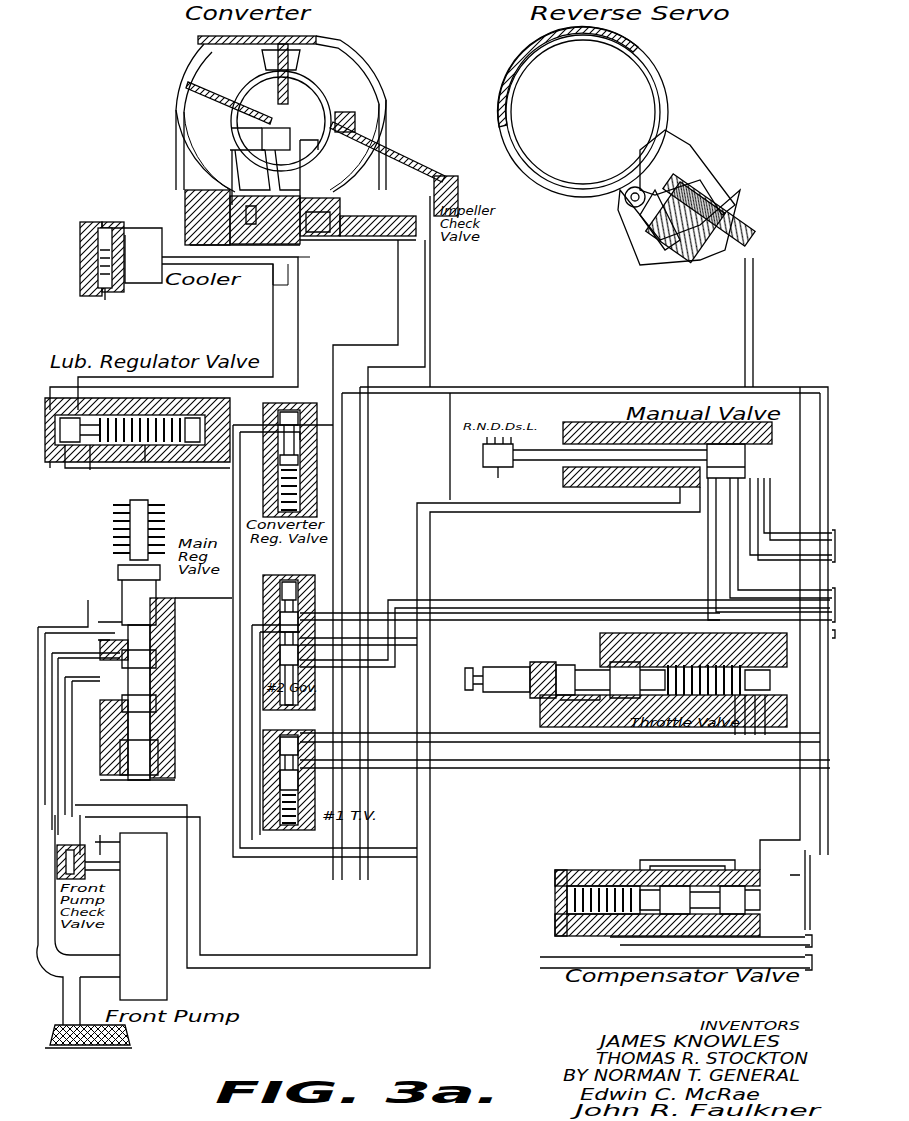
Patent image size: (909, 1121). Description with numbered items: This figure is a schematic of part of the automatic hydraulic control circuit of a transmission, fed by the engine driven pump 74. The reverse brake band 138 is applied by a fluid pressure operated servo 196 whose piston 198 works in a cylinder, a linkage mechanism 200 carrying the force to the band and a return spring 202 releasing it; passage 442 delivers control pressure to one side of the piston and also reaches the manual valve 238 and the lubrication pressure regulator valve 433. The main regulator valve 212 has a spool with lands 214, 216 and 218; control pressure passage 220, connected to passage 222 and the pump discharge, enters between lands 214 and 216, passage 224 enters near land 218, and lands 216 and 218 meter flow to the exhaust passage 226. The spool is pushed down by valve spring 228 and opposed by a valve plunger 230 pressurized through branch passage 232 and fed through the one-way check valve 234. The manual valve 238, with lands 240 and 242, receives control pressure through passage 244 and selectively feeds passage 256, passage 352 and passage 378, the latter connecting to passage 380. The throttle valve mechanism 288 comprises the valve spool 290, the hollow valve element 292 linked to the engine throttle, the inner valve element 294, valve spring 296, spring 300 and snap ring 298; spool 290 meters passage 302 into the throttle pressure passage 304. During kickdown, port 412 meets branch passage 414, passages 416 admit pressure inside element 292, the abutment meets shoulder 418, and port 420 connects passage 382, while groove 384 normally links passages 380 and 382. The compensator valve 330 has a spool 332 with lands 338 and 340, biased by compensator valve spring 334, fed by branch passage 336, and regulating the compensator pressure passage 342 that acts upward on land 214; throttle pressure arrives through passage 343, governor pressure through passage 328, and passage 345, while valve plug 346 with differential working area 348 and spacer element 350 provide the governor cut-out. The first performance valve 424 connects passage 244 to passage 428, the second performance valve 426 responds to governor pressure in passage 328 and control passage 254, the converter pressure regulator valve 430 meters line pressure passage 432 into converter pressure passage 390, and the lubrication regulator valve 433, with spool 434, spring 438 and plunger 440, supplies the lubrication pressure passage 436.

The reverse brake band 138 is at (508, 148).
The fluid pressure operated servo 196 is at (746, 194).
The piston 198 is at (718, 248).
The linkage mechanism 200 is at (640, 222).
The return spring 202 is at (690, 245).
The passage 428 is at (428, 312).
The lubrication pressure passage 436 is at (270, 326).
The passage 442 is at (560, 387).
The valve spring 438 is at (165, 400).
The valve plunger 440 is at (205, 405).
The line pressure passage 432 is at (185, 463).
The valve spool 434 is at (70, 478).
The lubrication pressure regulator valve 433 is at (162, 455).
The converter pressure regulator valve 430 is at (278, 455).
The converter pressure passage 390 is at (340, 466).
The valve land 242 is at (748, 452).
The valve land 240 is at (620, 470).
The manual valve 238 is at (660, 470).
The passage 378 is at (735, 525).
The passage 352 is at (762, 553).
The passage 256 is at (700, 535).
The passage 328 is at (548, 600).
The passage 380 is at (632, 585).
The valve spring 228 is at (112, 522).
The main regulator valve 212 is at (130, 583).
The valve land 218 is at (135, 595).
The low pressure exhaust passage 226 is at (112, 610).
The valve land 216 is at (125, 646).
The second performance valve 426 is at (280, 612).
The valve land 214 is at (155, 710).
The valve plunger 230 is at (158, 758).
The branch passage 232 is at (148, 790).
The control pressure passage 220 is at (100, 808).
The first performance valve 424 is at (306, 710).
The passage 254 is at (468, 628).
The passage 382 is at (597, 640).
The groove 384 is at (570, 665).
The control pressure passage 244 is at (470, 668).
The valve spring 296 is at (535, 668).
The valve element 294 is at (618, 662).
The shoulder 418 is at (648, 668).
The spring 300 is at (695, 668).
The valve spool 290 is at (740, 668).
The throttle pressure passage 304 is at (800, 660).
The hollow valve element 292 is at (535, 696).
The passages 416 is at (565, 700).
The valve port 420 is at (580, 700).
The throttle valve mechanism 288 is at (605, 700).
The snap ring 298 is at (650, 690).
The passage 224 is at (672, 690).
The port 412 is at (615, 700).
The branch passage 414 is at (640, 700).
The passage 302 is at (652, 755).
The compensator pressure passage 342 is at (495, 835).
The valve spool 332 is at (632, 885).
The compensator valve 330 is at (630, 890).
The branch passage 336 is at (660, 870).
The valve land 338 is at (620, 885).
The compensator valve spring 334 is at (565, 890).
The passage 343 is at (740, 845).
The valve plug 346 is at (762, 890).
The differential working area 348 is at (755, 905).
The spacer element 350 is at (752, 922).
The valve land 340 is at (620, 930).
The control pressure passage 222 is at (450, 953).
The one-way check valve 234 is at (85, 866).
The engine driven pump 74 is at (150, 916).
The passage 345 is at (800, 945).